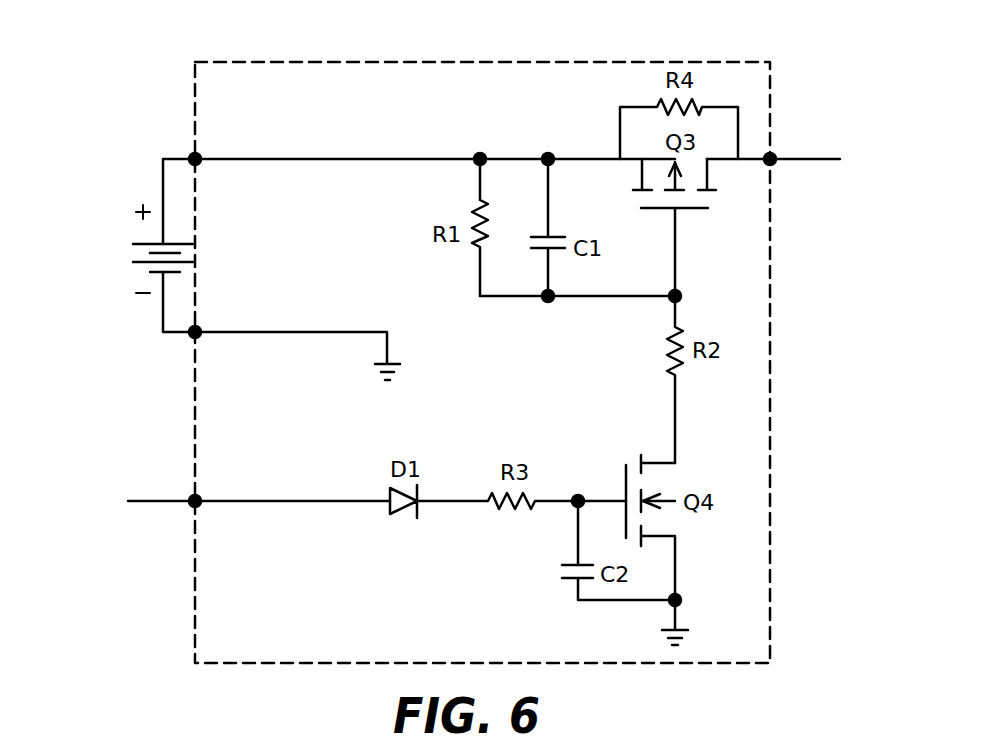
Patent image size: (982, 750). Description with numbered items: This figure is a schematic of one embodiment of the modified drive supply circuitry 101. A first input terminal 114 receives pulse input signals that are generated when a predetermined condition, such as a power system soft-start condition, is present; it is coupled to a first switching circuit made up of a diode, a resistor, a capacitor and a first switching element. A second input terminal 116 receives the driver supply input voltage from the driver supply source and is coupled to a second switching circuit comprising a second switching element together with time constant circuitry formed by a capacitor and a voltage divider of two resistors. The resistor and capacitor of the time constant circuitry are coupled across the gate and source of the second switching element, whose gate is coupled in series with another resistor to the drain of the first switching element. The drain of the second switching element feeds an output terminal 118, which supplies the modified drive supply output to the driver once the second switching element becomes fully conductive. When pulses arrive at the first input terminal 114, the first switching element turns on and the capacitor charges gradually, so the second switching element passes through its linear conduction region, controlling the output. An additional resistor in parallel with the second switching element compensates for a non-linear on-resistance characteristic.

The modified drive supply circuitry 101 is at (447, 85).
The second input terminal 116 is at (197, 163).
The output terminal 118 is at (772, 163).
The first input terminal 114 is at (197, 505).